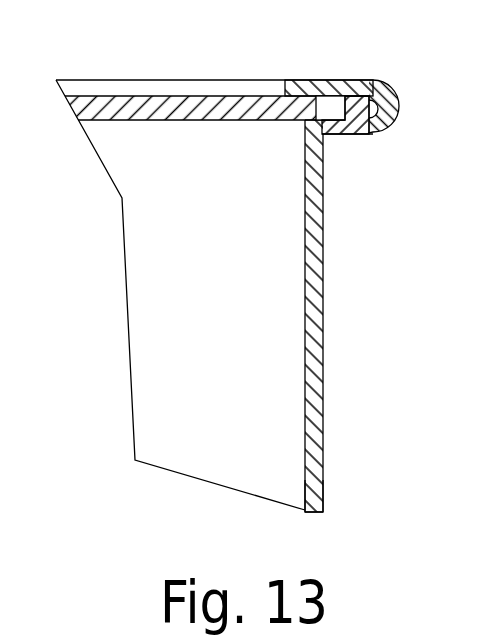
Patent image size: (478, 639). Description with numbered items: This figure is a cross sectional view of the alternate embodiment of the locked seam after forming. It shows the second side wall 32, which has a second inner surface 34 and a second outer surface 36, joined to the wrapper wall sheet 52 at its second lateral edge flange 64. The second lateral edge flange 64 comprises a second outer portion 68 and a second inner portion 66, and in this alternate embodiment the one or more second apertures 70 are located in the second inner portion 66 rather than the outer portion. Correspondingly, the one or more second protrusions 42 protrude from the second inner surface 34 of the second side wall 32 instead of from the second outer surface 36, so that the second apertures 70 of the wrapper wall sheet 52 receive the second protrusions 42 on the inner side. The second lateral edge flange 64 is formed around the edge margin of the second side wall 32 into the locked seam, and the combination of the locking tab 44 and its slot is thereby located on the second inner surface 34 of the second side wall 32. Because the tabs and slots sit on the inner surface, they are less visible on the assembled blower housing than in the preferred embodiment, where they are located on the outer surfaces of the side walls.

The second side wall 32 is at (214, 70).
The second outer surface 36 is at (158, 88).
The second inner surface 34 is at (123, 120).
The second outer portion 68 is at (364, 82).
The second lateral edge flange 64 is at (398, 108).
The second inner portion 66 is at (386, 133).
The second apertures 70 is at (362, 136).
The second protrusions 42 is at (371, 316).
The locking tab 44 is at (340, 136).
The wrapper wall sheet 52 is at (322, 460).